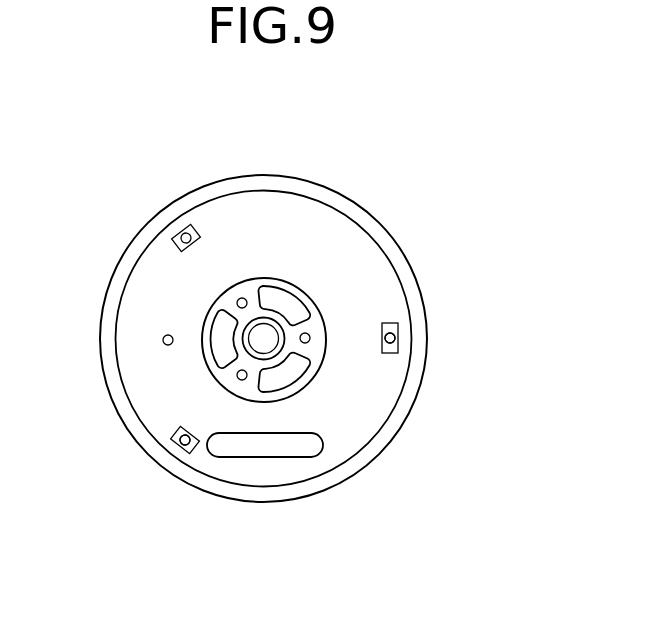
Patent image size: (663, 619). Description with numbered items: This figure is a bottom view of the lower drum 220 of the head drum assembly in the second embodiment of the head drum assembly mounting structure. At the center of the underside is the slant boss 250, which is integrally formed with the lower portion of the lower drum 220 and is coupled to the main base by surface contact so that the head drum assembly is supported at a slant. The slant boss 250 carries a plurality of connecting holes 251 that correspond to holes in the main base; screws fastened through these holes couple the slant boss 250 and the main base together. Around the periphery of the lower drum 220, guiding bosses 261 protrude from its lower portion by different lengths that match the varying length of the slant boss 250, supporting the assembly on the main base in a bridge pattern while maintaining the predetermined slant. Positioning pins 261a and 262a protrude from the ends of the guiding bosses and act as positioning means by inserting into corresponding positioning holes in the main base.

The lower drum 220 is at (352, 208).
The slant boss 250 is at (316, 298).
The connecting hole 251 is at (237, 301).
The guiding boss 261 is at (393, 353).
The positioning pin 261a is at (396, 338).
The positioning pin 262a is at (171, 453).